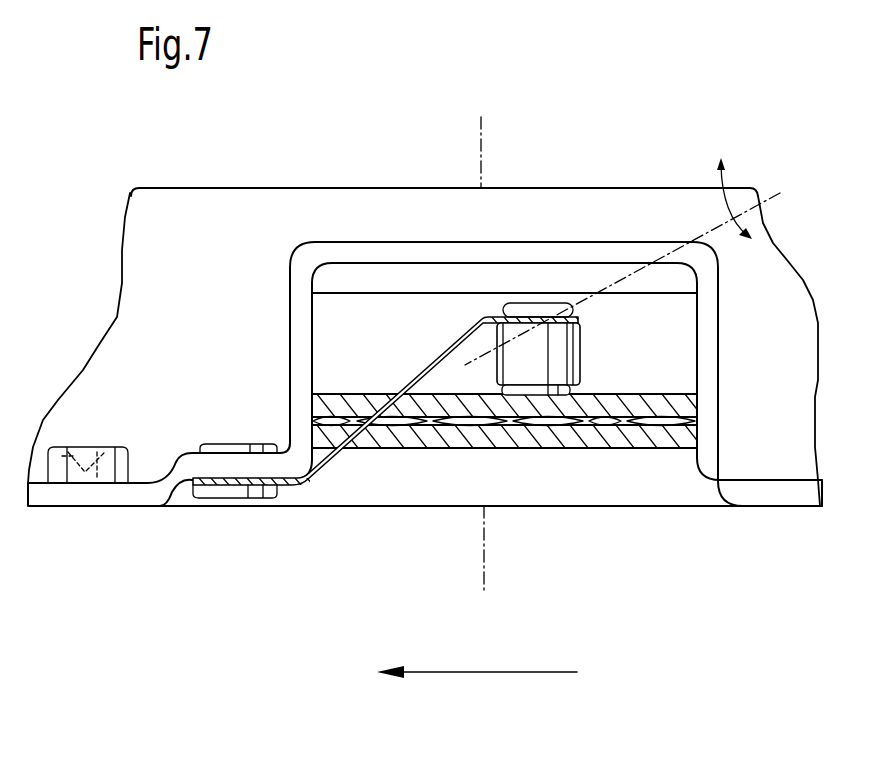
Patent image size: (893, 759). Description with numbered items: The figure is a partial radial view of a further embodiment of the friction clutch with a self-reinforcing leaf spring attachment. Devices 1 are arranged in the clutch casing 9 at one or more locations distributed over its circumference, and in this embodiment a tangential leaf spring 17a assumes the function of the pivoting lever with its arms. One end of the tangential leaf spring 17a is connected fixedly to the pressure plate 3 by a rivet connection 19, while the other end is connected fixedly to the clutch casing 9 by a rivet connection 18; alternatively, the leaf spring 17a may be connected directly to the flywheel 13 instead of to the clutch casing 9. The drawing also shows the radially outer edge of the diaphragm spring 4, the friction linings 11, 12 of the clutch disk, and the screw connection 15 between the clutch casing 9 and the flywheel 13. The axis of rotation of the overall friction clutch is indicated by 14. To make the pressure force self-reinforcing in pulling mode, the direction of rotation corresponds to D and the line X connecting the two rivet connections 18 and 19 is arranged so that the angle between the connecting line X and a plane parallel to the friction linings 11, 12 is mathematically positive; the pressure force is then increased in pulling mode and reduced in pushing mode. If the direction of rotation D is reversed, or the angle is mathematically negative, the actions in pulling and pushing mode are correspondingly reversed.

The device 1 is at (628, 329).
The pressure plate 3 is at (333, 335).
The diaphragm spring 4 is at (343, 277).
The clutch casing 9 is at (413, 198).
The friction lining 11 is at (659, 405).
The friction lining 12 is at (607, 448).
The flywheel 13 is at (440, 487).
The axis of rotation 14 is at (482, 142).
The screw connection 15 is at (57, 457).
The tangential leaf spring 17a is at (325, 486).
The rivet connection 18 is at (228, 490).
The rivet connection 19 is at (557, 308).
The connecting line X is at (620, 287).
The direction of rotation D is at (492, 672).